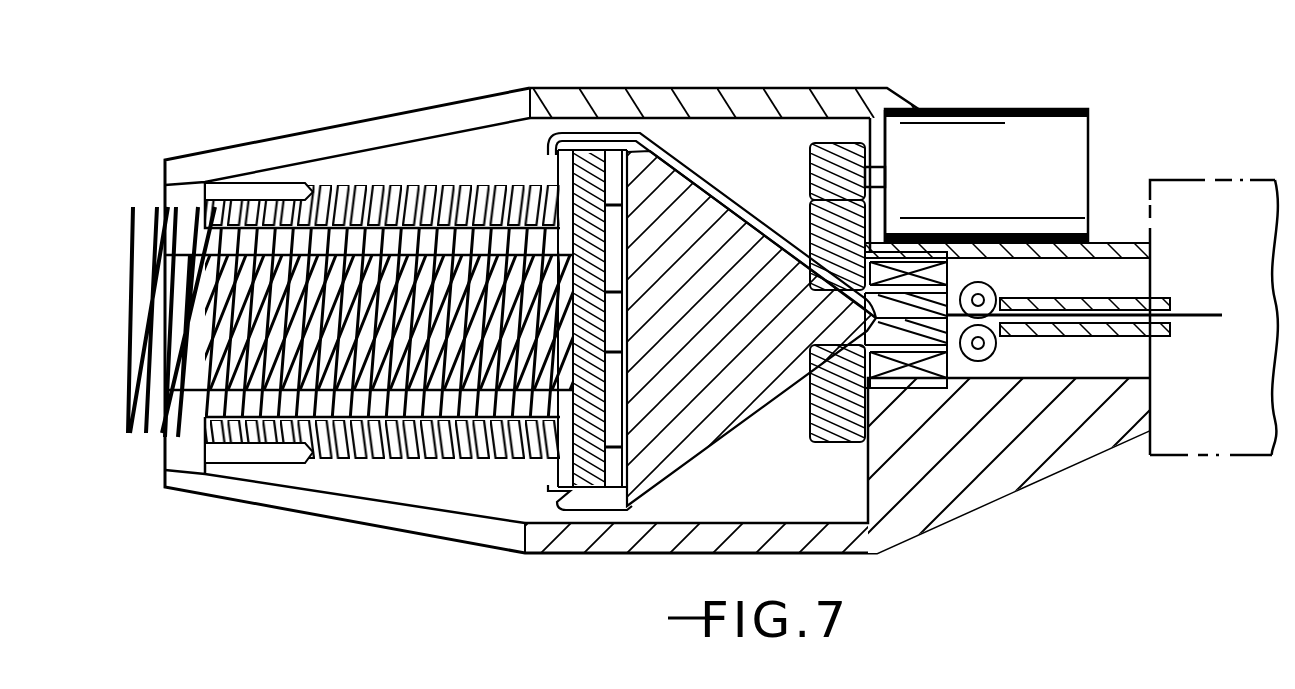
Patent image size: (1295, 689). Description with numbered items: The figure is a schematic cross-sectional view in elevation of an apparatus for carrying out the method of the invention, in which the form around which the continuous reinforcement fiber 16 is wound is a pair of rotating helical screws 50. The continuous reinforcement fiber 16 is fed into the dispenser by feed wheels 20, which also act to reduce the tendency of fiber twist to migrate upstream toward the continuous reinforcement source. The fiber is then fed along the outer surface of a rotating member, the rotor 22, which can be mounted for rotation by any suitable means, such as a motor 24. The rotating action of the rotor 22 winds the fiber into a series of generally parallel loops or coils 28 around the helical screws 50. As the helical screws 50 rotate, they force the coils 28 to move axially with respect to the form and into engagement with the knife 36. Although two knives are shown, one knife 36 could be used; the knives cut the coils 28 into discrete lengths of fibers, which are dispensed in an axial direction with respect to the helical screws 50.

The continuous reinforcement fiber 16 is at (1197, 313).
The feed wheels 20 is at (1003, 283).
The rotor 22 is at (735, 432).
The motor 24 is at (1053, 107).
The coils 28 is at (447, 232).
The knife 36 is at (247, 450).
The helical screws 50 is at (432, 478).